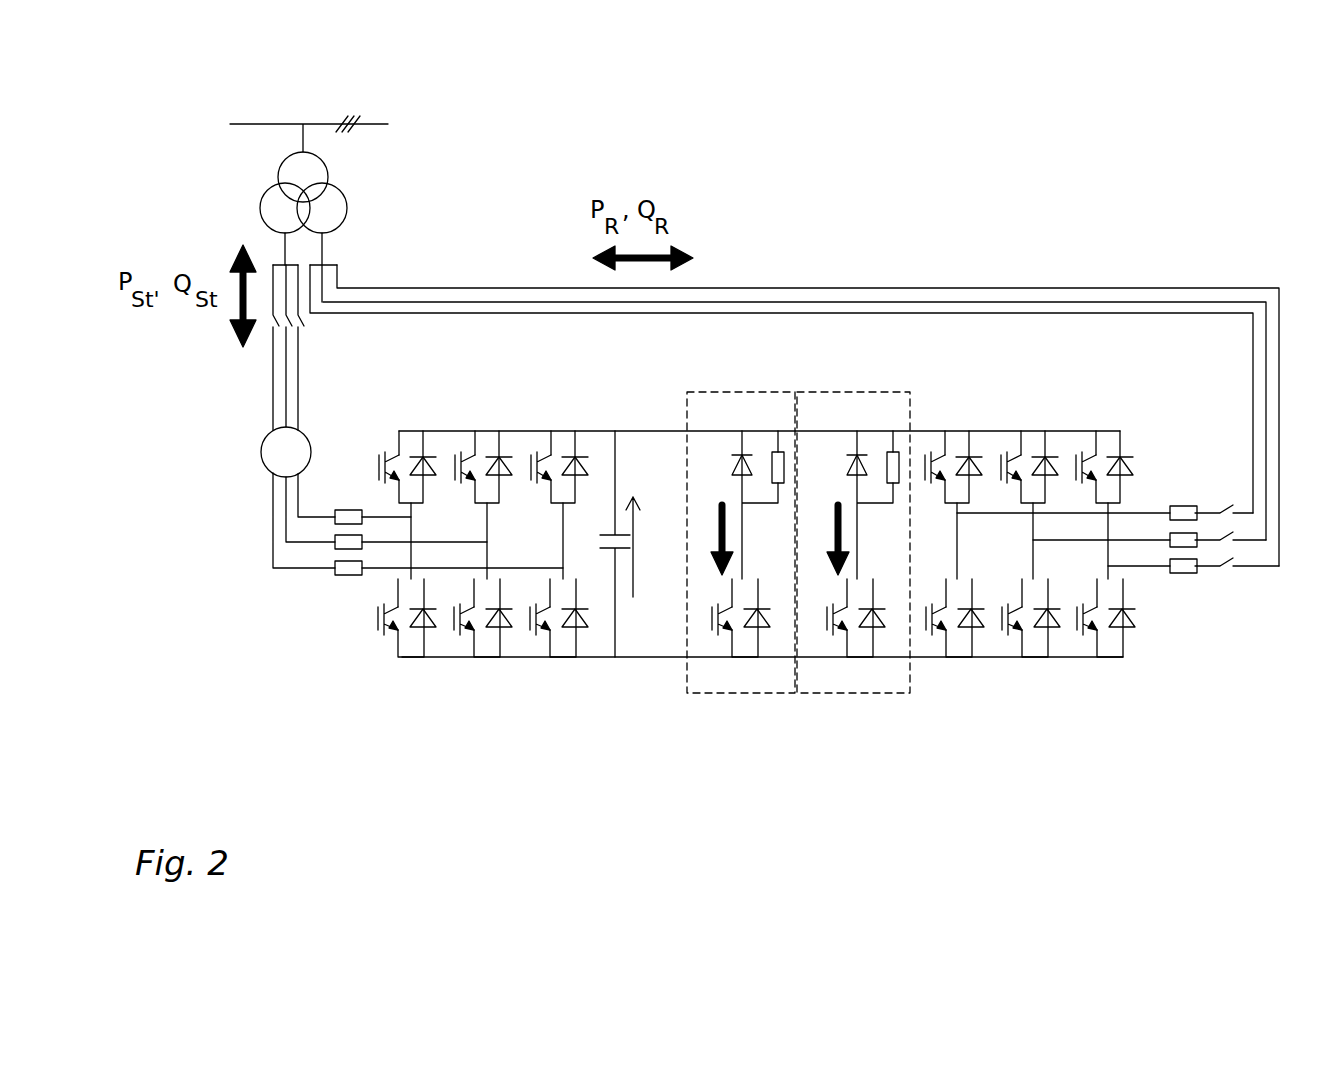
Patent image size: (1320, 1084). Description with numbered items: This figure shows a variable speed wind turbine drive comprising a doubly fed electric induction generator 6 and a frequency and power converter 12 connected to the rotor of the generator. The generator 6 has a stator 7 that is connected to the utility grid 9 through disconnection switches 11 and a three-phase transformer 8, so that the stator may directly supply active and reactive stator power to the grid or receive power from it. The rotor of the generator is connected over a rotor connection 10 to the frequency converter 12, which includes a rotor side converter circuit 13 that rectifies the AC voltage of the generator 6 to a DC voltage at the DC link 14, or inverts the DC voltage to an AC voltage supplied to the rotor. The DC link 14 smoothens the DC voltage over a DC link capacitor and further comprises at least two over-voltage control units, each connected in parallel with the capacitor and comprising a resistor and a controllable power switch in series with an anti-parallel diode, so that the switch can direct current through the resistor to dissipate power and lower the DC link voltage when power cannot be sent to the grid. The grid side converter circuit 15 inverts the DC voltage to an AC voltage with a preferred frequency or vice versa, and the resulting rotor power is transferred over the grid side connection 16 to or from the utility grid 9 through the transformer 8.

The doubly fed electric induction generator 6 is at (263, 447).
The stator 7 is at (273, 405).
The three phased transformer 8 is at (258, 203).
The power grid 9 is at (378, 124).
The rotor line 10 is at (273, 497).
The disconnection switches 11 is at (300, 318).
The frequency and power converter 12 is at (774, 601).
The rotor side converter circuit 13 is at (527, 430).
The DC link 14 is at (637, 430).
The grid side converter circuit 15 is at (1028, 428).
The grid-side line 16 is at (947, 288).